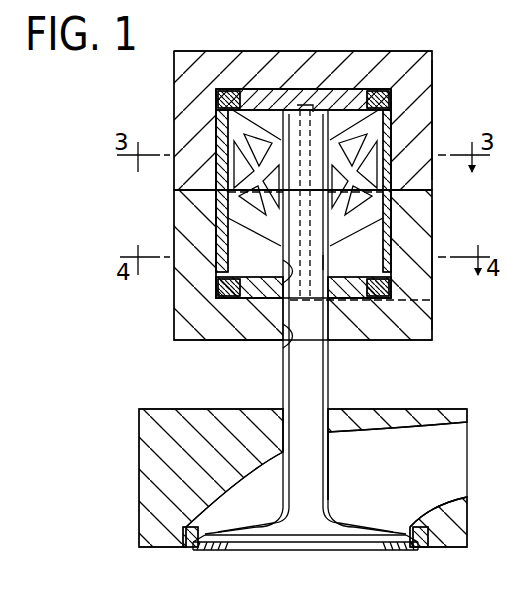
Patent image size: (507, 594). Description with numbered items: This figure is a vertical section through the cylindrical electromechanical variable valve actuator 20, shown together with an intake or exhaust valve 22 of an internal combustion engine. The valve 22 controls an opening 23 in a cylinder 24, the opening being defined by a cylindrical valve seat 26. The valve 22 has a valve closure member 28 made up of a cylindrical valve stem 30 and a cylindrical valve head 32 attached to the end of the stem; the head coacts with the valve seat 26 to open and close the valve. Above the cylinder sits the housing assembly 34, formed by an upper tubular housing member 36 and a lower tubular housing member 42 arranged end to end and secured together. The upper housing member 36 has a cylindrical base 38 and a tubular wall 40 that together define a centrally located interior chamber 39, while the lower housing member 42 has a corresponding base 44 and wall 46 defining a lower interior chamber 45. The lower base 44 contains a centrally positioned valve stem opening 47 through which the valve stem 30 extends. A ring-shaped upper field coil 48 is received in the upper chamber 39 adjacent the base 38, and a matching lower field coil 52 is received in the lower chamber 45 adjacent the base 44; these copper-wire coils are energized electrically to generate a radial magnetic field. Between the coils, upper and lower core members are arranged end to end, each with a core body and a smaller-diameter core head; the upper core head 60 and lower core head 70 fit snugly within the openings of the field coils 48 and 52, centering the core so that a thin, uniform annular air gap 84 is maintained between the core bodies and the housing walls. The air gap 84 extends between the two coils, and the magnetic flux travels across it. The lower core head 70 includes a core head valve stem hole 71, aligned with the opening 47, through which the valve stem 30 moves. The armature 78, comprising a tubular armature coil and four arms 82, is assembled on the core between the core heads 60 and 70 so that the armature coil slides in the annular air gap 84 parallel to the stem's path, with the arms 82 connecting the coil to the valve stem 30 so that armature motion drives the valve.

The electromechanical variable valve actuator 20 is at (96, 204).
The valve 22 is at (341, 550).
The opening 23 is at (390, 523).
The cylinder 24 is at (141, 505).
The cylindrical valve seat 26 is at (191, 548).
The valve closure member 28 is at (281, 385).
The cylindrical valve stem 30 is at (331, 476).
The cylindrical valve head 32 is at (321, 552).
The housing assembly 34 is at (436, 192).
The upper tubular housing member 36 is at (335, 183).
The cylindrical base of the upper housing member 38 is at (330, 52).
The interior chamber of the upper housing member 39 is at (357, 92).
The tubular wall of the upper housing member 40 is at (424, 113).
The lower tubular housing member 42 is at (422, 332).
The cylindrical base of the lower housing member 44 is at (219, 335).
The interior chamber of the lower housing member 45 is at (325, 262).
The tubular wall of the lower housing member 46 is at (420, 291).
The valve stem opening 47 is at (290, 341).
The upper field coil 48 is at (223, 94).
The lower field coil 52 is at (221, 298).
The upper core head 60 is at (289, 88).
The lower core head 70 is at (331, 305).
The core head valve stem hole 71 is at (284, 271).
The armature 78 is at (262, 183).
The arms 82 is at (273, 226).
The annular air gap 84 is at (392, 216).